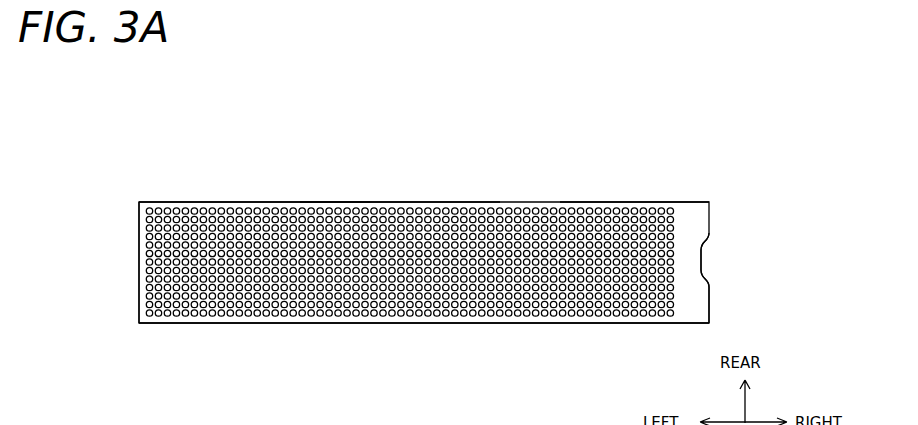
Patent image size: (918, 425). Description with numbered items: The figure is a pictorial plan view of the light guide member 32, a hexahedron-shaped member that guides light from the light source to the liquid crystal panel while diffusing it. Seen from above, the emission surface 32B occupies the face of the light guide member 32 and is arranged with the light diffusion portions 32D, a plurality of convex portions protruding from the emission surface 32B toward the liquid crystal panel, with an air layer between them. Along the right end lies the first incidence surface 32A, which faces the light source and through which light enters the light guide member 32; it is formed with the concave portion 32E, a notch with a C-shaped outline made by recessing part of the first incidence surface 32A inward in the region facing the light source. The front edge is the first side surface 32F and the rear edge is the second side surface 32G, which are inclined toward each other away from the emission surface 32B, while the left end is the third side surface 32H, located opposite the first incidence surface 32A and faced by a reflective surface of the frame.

The light guide member 32 is at (406, 182).
The first incidence surface 32A is at (722, 304).
The emission surface 32B is at (510, 203).
The light diffusion portions 32D is at (608, 203).
The concave portion 32E is at (702, 253).
The first side surface 32F is at (329, 334).
The second side surface 32G is at (331, 192).
The third side surface 32H is at (126, 270).